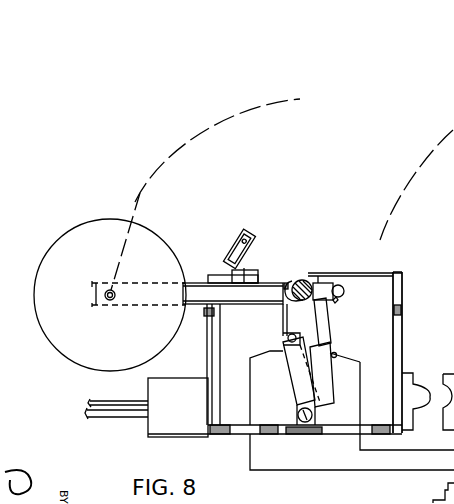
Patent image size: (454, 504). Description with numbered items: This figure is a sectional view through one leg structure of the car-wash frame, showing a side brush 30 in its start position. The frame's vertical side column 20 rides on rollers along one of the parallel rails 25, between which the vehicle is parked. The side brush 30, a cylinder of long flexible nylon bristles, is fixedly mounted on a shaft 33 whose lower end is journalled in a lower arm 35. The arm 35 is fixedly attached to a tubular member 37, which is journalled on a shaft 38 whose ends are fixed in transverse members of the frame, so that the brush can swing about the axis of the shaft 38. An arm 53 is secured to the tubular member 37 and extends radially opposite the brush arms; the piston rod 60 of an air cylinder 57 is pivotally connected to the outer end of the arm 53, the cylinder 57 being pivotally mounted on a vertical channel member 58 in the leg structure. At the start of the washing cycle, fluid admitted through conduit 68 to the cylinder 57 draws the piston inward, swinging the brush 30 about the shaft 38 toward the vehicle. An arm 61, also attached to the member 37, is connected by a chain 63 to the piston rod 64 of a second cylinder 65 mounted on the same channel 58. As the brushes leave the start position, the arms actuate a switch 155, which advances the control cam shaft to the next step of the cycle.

The vertical side column 20 is at (225, 443).
The rail 25 is at (90, 409).
The side brush 30 is at (453, 66).
The shaft 33 is at (114, 300).
The lower arm 35 is at (195, 297).
The tubular member 37 is at (320, 282).
The shaft 38 is at (304, 280).
The arm 53 is at (352, 275).
The air cylinder 57 is at (322, 377).
The vertical channel member 58 is at (297, 434).
The piston rod 60 is at (328, 320).
The arm 61 is at (290, 281).
The chain 63 is at (282, 314).
The piston rod 64 is at (286, 336).
The cylinder 65 is at (296, 366).
The conduit 68 is at (342, 356).
The switch 155 is at (245, 233).